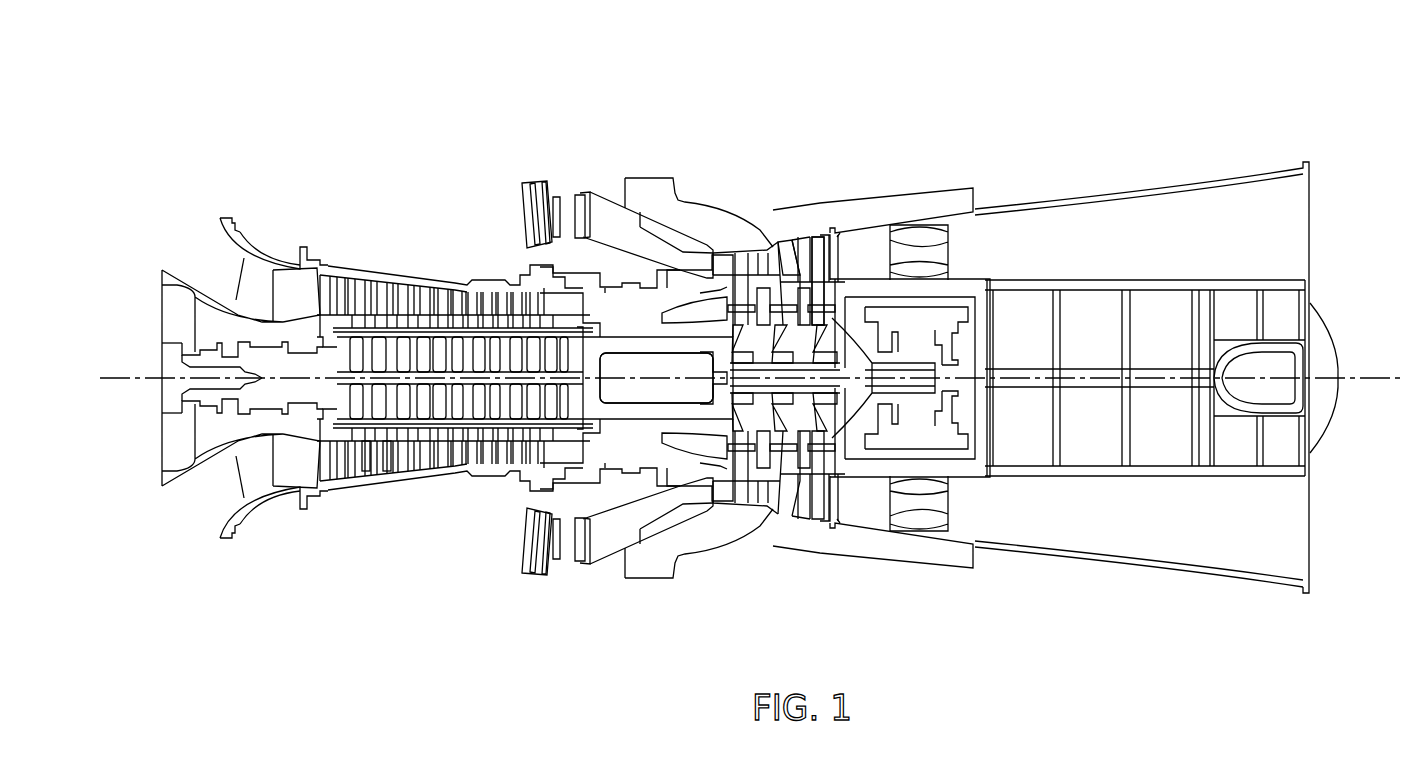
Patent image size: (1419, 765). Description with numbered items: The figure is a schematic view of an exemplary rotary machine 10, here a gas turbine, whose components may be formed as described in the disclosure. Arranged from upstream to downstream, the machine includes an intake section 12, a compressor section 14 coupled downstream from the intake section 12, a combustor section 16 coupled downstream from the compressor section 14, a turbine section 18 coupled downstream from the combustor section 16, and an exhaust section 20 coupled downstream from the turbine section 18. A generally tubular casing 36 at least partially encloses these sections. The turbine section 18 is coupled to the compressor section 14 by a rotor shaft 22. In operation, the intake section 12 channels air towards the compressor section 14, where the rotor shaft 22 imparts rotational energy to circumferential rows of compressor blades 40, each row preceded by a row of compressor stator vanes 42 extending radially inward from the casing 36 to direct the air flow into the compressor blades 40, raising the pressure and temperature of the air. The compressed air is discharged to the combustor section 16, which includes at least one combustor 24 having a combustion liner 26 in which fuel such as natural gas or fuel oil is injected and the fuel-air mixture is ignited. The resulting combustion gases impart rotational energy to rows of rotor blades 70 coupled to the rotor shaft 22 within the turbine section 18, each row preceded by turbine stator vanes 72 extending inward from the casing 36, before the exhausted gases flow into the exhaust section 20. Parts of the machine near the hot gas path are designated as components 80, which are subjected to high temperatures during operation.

The rotary machine 10 is at (750, 330).
The intake section 12 is at (212, 252).
The compressor section 14 is at (408, 258).
The combustor section 16 is at (576, 118).
The turbine section 18 is at (830, 82).
The exhaust section 20 is at (1148, 158).
The rotor shaft 22 is at (908, 353).
The combustor 24 is at (607, 572).
The combustion liner 26 is at (611, 195).
The casing 36 is at (885, 210).
The compressor blades 40 is at (387, 480).
The compressor stator vanes 42 is at (365, 472).
The rotor blades 70 is at (787, 225).
The turbine stator vanes 72 is at (765, 250).
The components 80 is at (725, 269).